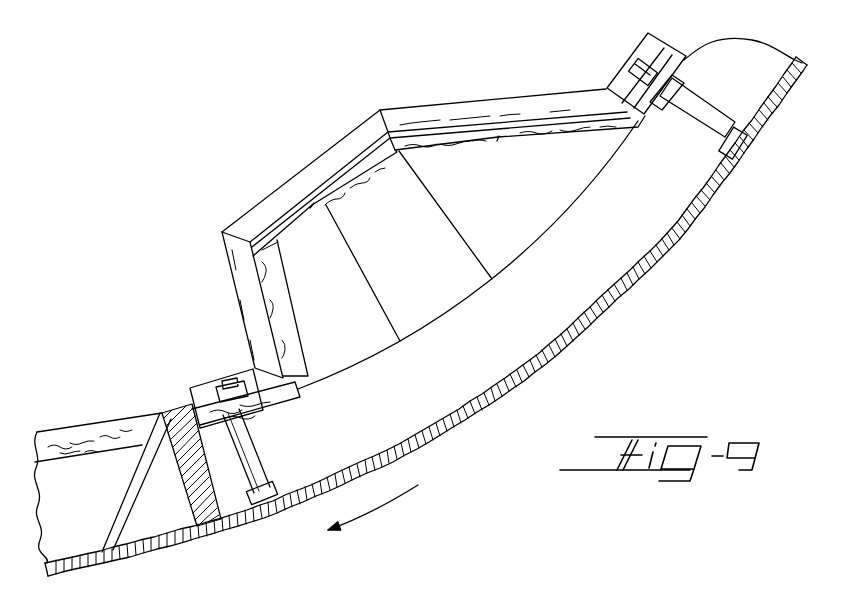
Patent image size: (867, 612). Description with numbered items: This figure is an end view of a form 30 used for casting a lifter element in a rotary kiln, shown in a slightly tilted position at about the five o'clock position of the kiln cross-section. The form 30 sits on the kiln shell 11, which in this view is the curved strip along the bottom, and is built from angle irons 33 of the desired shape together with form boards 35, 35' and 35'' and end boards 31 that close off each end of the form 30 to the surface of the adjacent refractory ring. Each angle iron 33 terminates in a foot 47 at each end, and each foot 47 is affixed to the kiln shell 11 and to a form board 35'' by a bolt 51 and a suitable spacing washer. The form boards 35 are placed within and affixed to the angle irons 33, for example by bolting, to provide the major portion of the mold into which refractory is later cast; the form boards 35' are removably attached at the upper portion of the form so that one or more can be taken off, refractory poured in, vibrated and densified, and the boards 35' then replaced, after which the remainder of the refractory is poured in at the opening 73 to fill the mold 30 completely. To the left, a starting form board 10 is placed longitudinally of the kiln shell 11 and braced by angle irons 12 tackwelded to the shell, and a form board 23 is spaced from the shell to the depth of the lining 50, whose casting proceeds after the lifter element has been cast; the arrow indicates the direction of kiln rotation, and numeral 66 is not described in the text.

The starting form board 10 is at (183, 420).
The kiln shell 11 is at (640, 282).
The angle irons 12 is at (137, 473).
The form boards 23 is at (108, 433).
The form 30 is at (550, 85).
The end boards 31 is at (345, 342).
The angle irons 33 is at (413, 118).
The form boards 35 is at (449, 267).
The form boards 35' is at (405, 189).
The form board 35'' is at (470, 251).
The foot 47 is at (205, 398).
The lining 50 is at (72, 507).
The bolt 51 is at (262, 467).
The direction arrow 66 is at (373, 548).
The opening 73 is at (762, 63).